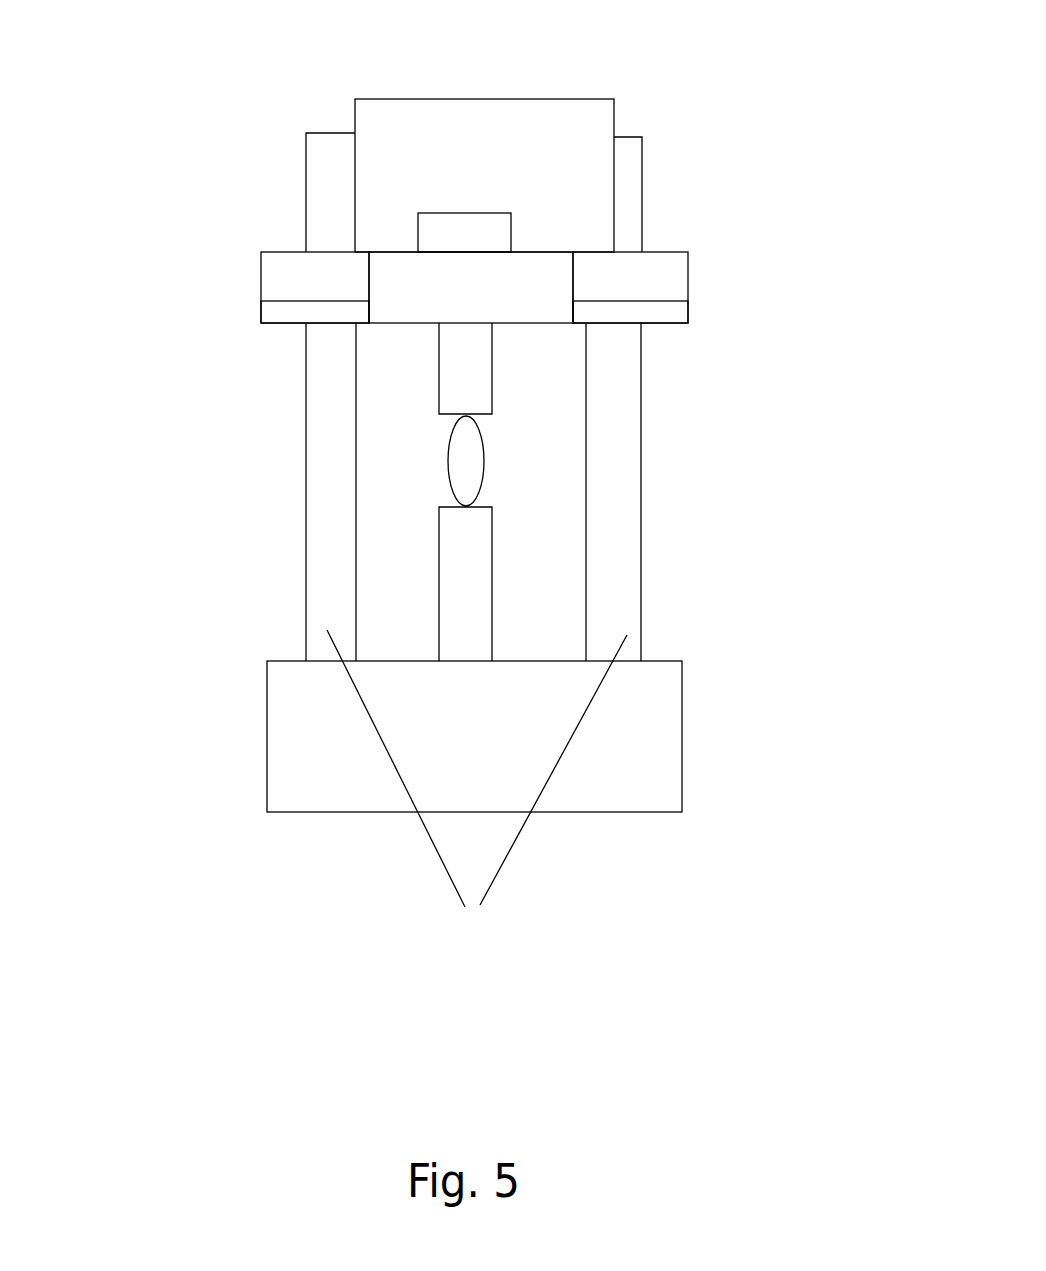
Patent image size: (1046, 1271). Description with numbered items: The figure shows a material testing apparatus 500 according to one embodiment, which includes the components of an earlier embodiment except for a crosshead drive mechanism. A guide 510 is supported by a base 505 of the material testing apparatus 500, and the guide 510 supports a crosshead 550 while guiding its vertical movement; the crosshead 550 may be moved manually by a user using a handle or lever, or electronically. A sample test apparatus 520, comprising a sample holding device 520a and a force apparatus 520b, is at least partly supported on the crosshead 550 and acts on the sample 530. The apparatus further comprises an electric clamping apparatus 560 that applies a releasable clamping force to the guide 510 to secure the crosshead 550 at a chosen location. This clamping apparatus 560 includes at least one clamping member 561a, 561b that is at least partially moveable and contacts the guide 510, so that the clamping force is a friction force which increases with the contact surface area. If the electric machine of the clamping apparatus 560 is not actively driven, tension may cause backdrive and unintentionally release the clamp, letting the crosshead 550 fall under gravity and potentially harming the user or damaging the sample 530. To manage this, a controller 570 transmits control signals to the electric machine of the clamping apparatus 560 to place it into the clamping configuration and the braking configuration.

The material testing apparatus 500 is at (244, 61).
The base 505 is at (650, 764).
The guide 510 is at (477, 805).
The sample test apparatus 520 is at (802, 173).
The sample holding device 520a is at (463, 555).
The force apparatus 520b is at (562, 218).
The sample 530 is at (472, 470).
The crosshead 550 is at (437, 268).
The electric clamping apparatus 560 is at (603, 291).
The clamping member 561a is at (292, 310).
The clamping member 561b is at (628, 314).
The controller 570 is at (479, 228).